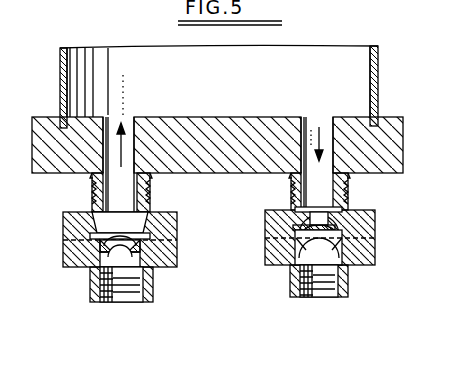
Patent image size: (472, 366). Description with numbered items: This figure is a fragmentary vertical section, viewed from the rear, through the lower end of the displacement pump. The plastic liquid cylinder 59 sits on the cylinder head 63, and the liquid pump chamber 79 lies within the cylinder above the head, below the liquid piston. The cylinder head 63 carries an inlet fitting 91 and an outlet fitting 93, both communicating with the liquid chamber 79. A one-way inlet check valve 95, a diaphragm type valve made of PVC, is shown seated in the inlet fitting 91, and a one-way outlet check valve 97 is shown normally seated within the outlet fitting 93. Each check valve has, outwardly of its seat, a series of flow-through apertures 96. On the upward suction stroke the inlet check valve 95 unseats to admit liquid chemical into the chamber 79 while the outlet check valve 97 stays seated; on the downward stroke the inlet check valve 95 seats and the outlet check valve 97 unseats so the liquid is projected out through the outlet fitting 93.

The liquid cylinder 59 is at (378, 78).
The cylinder head 63 is at (396, 146).
The liquid pump chamber 79 is at (339, 53).
The inlet fitting 91 is at (65, 226).
The outlet fitting 93 is at (376, 225).
The inlet check valve 95 is at (115, 250).
The flow-through apertures 96 is at (160, 254).
The outlet check valve 97 is at (376, 250).